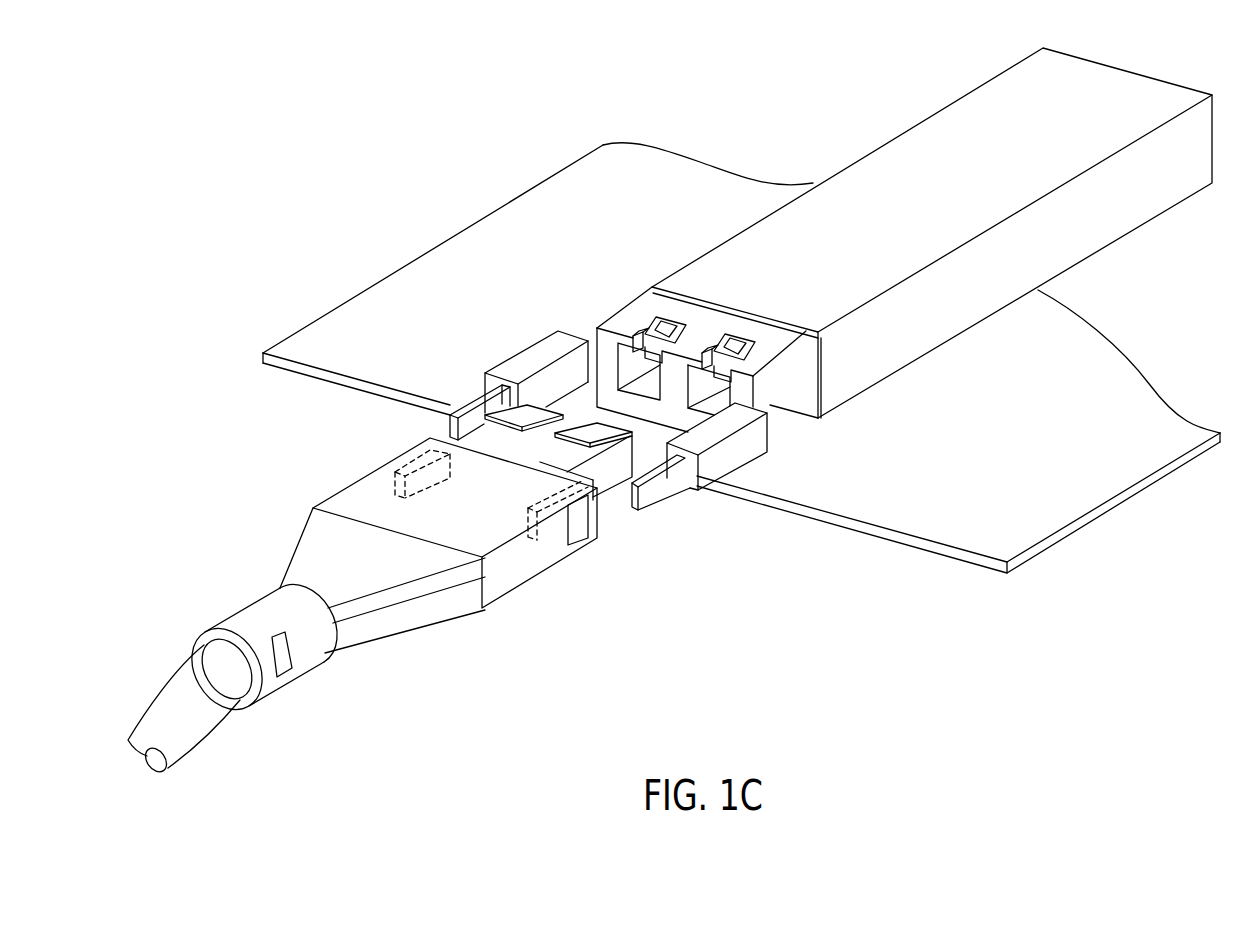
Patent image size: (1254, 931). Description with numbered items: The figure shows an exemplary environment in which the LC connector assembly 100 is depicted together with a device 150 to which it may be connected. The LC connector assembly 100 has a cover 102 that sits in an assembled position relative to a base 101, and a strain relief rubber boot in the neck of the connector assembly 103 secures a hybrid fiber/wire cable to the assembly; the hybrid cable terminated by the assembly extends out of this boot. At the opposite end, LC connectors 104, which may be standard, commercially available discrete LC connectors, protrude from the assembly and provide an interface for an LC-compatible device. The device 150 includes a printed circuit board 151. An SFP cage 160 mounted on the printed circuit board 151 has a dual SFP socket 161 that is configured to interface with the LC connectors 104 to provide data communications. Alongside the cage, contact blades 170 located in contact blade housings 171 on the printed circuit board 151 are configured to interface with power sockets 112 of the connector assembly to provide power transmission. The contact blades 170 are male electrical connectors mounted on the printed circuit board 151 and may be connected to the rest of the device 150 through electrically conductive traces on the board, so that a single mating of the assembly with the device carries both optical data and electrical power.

The LC connector assembly 100 is at (381, 591).
The base 101 is at (422, 611).
The cover 102 is at (438, 507).
The strain relief rubber boot in the neck of the connector assembly 103 is at (250, 622).
The LC connectors 104 is at (601, 471).
The power sockets 112 is at (409, 458).
The device 150 is at (741, 342).
The printed circuit board 151 is at (900, 522).
The SFP cage 160 is at (831, 295).
The dual SFP socket 161 is at (630, 334).
The contact blades 170 is at (667, 483).
The contact blade housings 171 is at (708, 468).